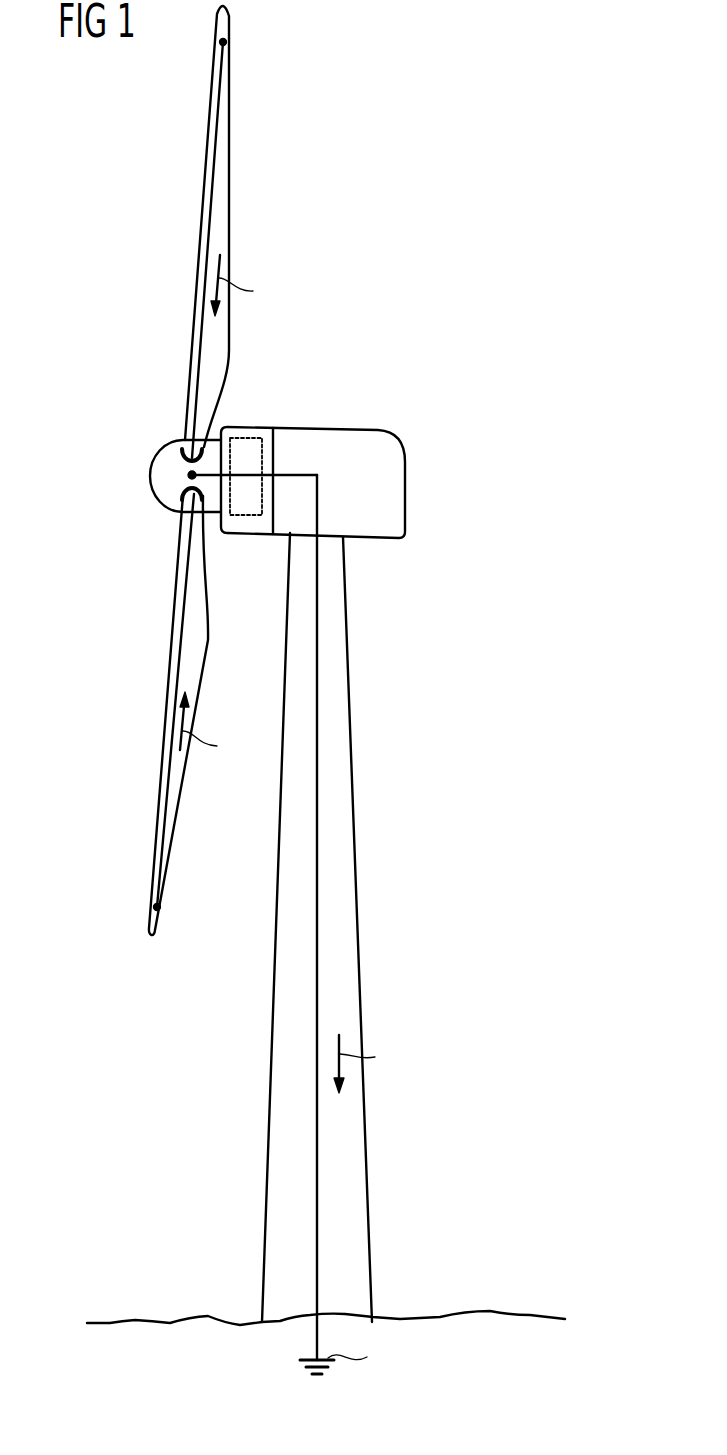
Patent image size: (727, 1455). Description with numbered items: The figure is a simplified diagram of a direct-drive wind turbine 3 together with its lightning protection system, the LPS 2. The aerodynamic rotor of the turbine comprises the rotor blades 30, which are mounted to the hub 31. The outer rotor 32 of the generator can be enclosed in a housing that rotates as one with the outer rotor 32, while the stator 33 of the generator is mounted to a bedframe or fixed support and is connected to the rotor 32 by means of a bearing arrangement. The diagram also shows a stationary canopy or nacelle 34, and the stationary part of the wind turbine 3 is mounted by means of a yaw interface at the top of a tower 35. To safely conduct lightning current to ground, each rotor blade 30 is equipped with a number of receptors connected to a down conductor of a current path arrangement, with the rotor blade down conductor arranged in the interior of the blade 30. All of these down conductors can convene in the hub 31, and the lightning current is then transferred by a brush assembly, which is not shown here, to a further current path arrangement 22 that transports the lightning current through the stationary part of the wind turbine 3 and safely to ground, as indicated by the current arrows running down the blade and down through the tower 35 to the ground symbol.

The lightning protection system 2 is at (320, 471).
The direct-drive wind turbine 3 is at (449, 291).
The further current path arrangement 22 is at (322, 782).
The rotor blade 30 is at (222, 197).
The hub 31 is at (160, 470).
The outer rotor 32 is at (246, 430).
The stator 33 is at (243, 513).
The nacelle 34 is at (390, 494).
The tower 35 is at (346, 928).